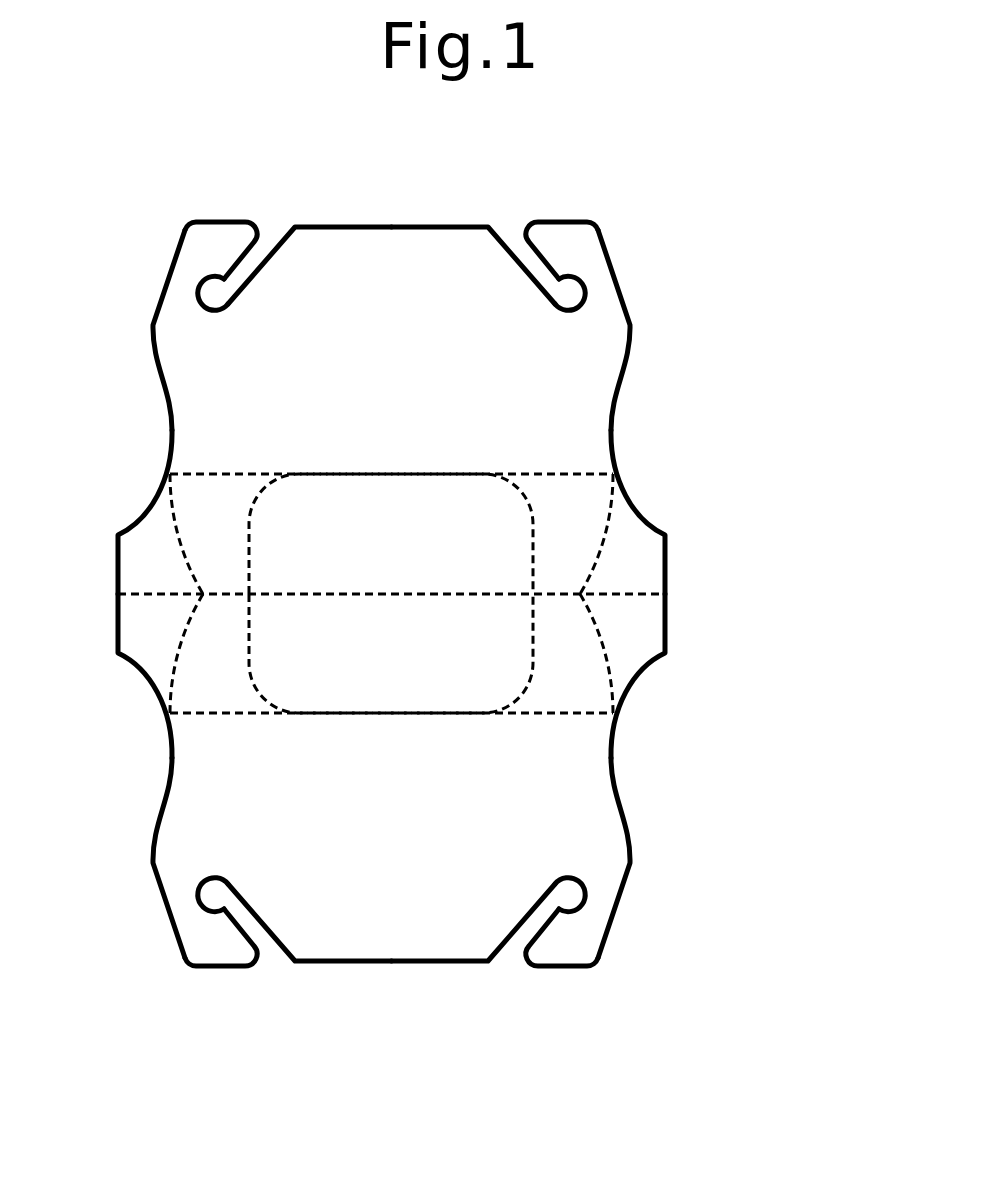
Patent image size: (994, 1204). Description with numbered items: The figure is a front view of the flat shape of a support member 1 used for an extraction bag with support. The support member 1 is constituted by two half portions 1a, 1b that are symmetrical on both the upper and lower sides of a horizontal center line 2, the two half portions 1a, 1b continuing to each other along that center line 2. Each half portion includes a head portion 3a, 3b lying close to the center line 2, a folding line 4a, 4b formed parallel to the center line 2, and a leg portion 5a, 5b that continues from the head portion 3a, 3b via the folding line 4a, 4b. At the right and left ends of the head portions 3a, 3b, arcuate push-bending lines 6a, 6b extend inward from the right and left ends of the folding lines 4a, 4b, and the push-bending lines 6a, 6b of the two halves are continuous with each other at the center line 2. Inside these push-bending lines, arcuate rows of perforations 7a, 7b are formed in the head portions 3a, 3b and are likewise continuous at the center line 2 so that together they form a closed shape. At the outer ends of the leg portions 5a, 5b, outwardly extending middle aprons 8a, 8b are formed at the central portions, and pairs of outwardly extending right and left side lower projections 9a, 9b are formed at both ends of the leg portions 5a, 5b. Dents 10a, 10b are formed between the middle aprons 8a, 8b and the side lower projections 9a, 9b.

The support member 1 is at (468, 590).
The half portion 1a is at (808, 596).
The half portion 1b is at (808, 220).
The center line 2 is at (615, 591).
The head portion 3a is at (735, 596).
The head portion 3b is at (735, 478).
The folding line 4a is at (562, 716).
The folding line 4b is at (580, 474).
The leg portion 5a is at (735, 716).
The leg portion 5b is at (735, 220).
The arcuate push-bending line 6a is at (200, 636).
The arcuate push-bending line 6b is at (198, 550).
The arcuate row of perforations 7a is at (532, 655).
The arcuate row of perforations 7b is at (532, 522).
The middle apron 8a is at (381, 942).
The middle apron 8b is at (370, 246).
The side lower projection 9a is at (220, 945).
The side lower projection 9b is at (220, 243).
The dent 10a is at (217, 890).
The dent 10b is at (217, 298).